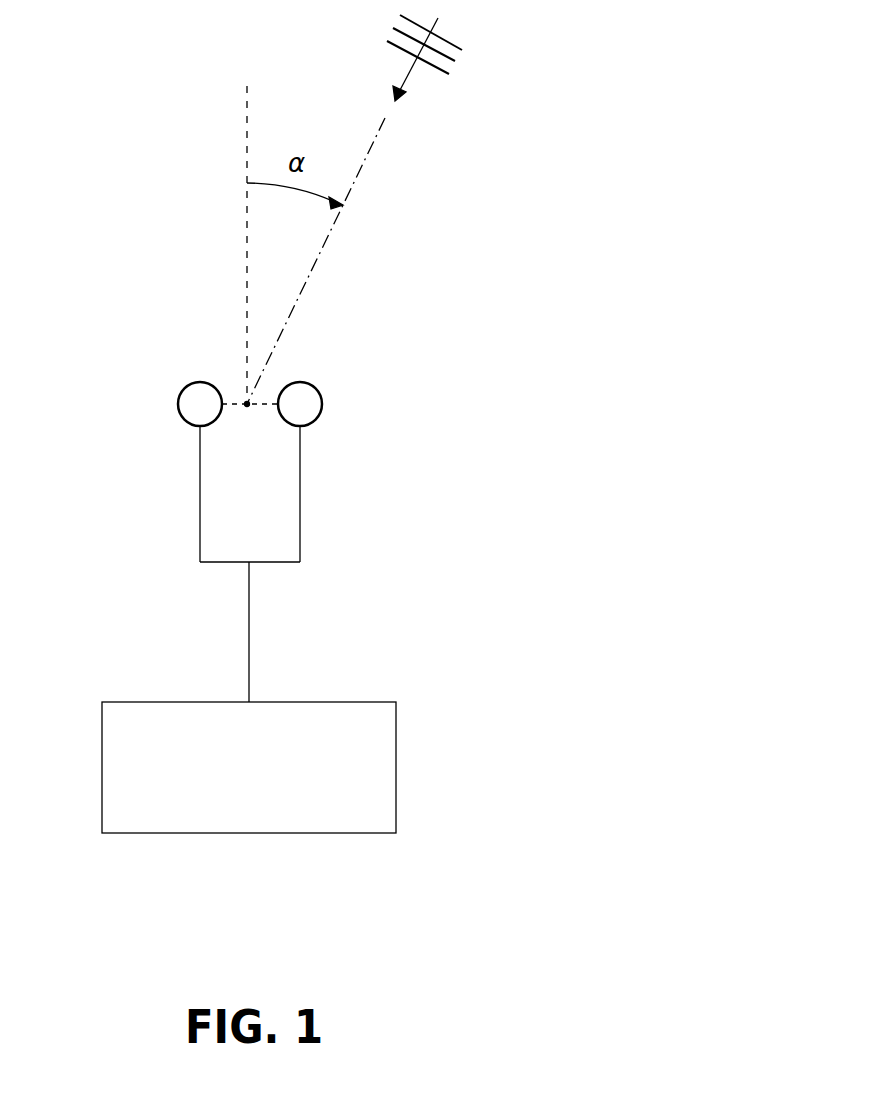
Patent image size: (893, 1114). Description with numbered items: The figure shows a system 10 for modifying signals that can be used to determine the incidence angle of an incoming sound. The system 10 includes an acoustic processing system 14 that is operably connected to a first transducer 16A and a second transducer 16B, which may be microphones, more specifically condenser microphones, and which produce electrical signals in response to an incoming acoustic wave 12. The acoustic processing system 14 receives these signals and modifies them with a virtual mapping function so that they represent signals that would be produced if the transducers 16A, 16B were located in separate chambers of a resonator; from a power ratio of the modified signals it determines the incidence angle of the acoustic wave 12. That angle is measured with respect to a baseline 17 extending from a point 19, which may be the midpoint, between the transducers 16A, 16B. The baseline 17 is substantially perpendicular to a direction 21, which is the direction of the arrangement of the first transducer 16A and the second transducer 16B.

The system 10 is at (552, 296).
The incoming acoustic wave 12 is at (446, 40).
The acoustic processing system 14 is at (397, 755).
The first transducer 16A is at (190, 401).
The second transducer 16B is at (310, 400).
The baseline 17 is at (246, 215).
The point 19 is at (245, 410).
The direction 21 is at (234, 402).